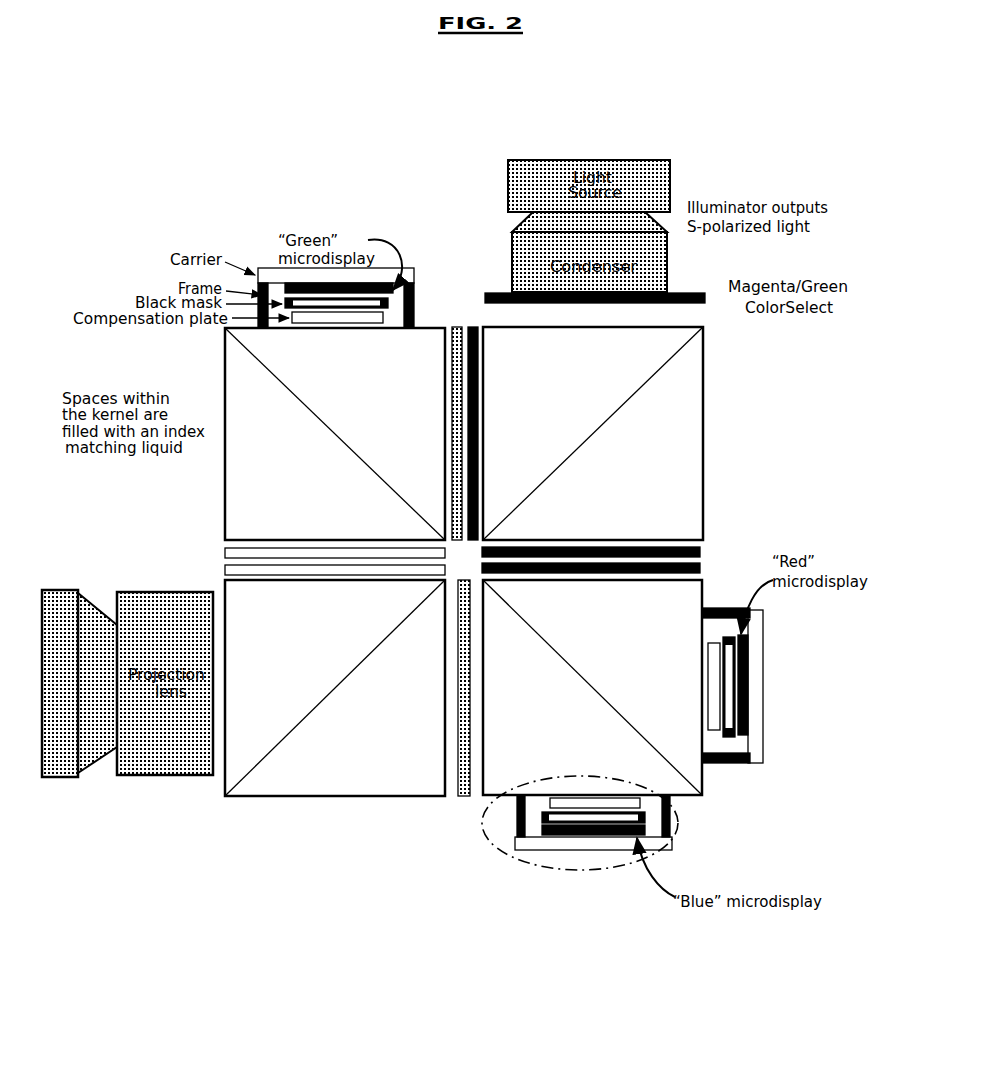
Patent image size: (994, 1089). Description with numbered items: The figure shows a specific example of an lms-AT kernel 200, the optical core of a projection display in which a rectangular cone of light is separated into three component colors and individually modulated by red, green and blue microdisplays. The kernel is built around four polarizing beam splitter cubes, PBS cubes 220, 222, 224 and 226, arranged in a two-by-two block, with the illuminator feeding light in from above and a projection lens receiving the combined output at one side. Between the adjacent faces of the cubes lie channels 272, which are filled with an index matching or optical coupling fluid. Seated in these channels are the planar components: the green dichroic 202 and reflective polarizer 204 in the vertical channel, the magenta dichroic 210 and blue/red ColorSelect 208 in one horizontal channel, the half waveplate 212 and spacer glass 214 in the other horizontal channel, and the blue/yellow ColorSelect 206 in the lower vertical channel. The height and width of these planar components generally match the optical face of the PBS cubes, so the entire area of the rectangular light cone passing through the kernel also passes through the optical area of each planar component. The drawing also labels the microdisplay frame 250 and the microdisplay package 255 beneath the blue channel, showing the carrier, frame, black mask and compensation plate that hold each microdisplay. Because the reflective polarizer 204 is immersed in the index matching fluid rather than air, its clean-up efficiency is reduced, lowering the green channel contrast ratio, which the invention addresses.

The lms-AT kernel 200 is at (315, 881).
The green dichroic 202 is at (480, 448).
The reflective polarizer 204 is at (450, 427).
The blue/yellow ColorSelect 206 is at (456, 669).
The blue/red ColorSelect 208 is at (550, 577).
The magenta dichroic 210 is at (568, 545).
The half waveplate 212 is at (280, 545).
The spacer glass 214 is at (293, 579).
The PBS cube 220 is at (688, 422).
The PBS cube 222 is at (272, 420).
The PBS cube 224 is at (270, 719).
The PBS cube 226 is at (536, 746).
The microdisplay frame 250 is at (676, 799).
The microdisplay package 255 is at (636, 862).
The channels 272 is at (481, 321).